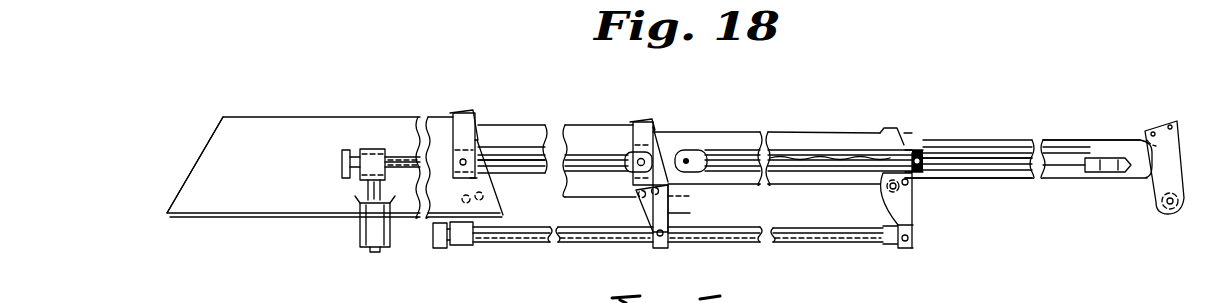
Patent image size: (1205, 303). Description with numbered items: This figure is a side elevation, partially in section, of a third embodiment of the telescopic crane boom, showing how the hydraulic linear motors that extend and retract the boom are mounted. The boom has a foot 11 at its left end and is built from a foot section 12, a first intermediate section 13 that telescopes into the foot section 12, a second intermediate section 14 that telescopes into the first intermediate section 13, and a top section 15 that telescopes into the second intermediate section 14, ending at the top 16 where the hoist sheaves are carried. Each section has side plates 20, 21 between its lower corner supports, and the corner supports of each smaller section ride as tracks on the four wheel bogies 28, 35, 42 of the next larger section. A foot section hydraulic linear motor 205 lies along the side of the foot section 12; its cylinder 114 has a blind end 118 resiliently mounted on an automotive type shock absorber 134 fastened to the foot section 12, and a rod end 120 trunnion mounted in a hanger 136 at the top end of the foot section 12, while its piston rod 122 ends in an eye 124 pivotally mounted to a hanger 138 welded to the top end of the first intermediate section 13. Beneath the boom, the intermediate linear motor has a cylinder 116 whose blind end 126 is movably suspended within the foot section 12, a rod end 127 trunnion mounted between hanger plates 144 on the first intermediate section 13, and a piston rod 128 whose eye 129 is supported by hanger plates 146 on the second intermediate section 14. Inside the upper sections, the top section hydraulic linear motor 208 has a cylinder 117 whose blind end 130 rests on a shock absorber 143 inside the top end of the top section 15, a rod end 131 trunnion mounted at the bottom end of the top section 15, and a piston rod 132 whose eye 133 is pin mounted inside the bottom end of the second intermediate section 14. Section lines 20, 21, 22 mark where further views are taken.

The foot of the boom 11 is at (211, 132).
The foot section 12 is at (282, 116).
The first intermediate section 13 is at (603, 120).
The second intermediate section 14 is at (799, 126).
The top section 15 is at (1014, 134).
The top of the top section 16 is at (1183, 131).
The side plate 20 is at (462, 63).
The side plate 21 is at (685, 77).
The section line 22 is at (947, 88).
The four wheel bogie 28 is at (490, 201).
The four wheel bogie 35 is at (690, 196).
The four wheel bogie 42 is at (912, 183).
The cylinder 114 is at (400, 157).
The cylinder 116 is at (520, 246).
The cylinder 117 is at (1008, 168).
The blind end 118 is at (348, 149).
The rod end 120 is at (482, 150).
The piston rod 122 is at (608, 156).
The eye 124 is at (640, 178).
The blind end 126 is at (438, 250).
The rod end 127 is at (673, 245).
The piston rod 128 is at (840, 240).
The eye 129 is at (893, 238).
The blind end 130 is at (1082, 165).
The rod end 131 is at (918, 148).
The piston rod 132 is at (836, 160).
The eye 133 is at (694, 156).
The shock absorber 134 is at (358, 238).
The hanger 136 is at (456, 133).
The hanger 138 is at (646, 132).
The shock absorber 143 is at (1110, 156).
The hanger plate 144 is at (690, 213).
The hanger plate 146 is at (905, 222).
The foot section hydraulic linear motor 205 is at (526, 148).
The top section hydraulic linear motor 208 is at (975, 150).